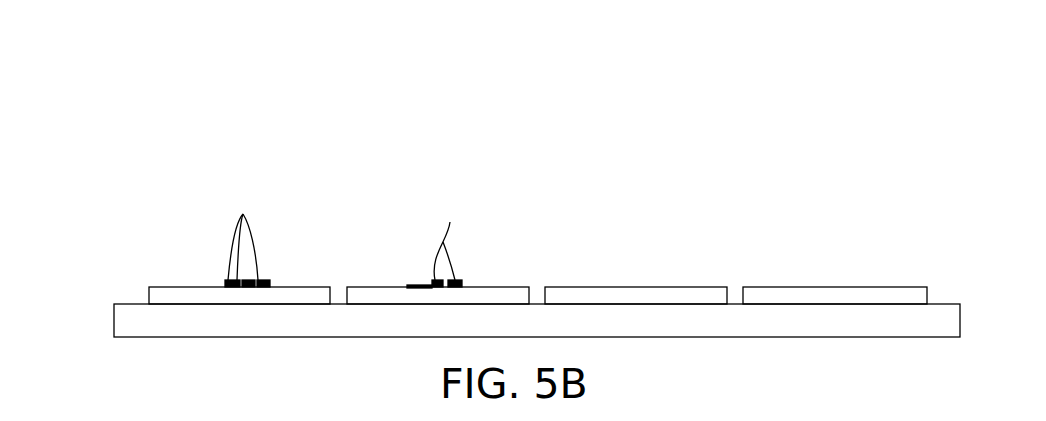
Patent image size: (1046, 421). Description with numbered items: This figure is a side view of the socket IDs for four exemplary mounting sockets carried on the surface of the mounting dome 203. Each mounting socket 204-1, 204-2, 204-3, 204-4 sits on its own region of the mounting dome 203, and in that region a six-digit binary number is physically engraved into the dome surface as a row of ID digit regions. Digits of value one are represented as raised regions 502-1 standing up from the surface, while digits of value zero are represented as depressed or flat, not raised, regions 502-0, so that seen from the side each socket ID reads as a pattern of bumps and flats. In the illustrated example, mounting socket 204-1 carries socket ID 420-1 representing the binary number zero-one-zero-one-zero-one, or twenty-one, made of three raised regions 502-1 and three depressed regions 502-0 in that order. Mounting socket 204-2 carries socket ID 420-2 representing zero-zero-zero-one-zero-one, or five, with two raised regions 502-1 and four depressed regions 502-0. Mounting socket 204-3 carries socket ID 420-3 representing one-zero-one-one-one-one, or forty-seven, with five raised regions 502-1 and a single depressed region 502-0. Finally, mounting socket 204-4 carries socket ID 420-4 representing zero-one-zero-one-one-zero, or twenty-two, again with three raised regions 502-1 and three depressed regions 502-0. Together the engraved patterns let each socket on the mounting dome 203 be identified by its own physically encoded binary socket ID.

The mounting dome 203 is at (114, 304).
The mounting socket 204-1 is at (195, 287).
The mounting socket 204-2 is at (363, 287).
The mounting socket 204-3 is at (583, 287).
The mounting socket 204-4 is at (788, 287).
The socket ID 420-1 is at (254, 178).
The socket ID 420-2 is at (451, 178).
The socket ID 420-3 is at (660, 251).
The socket ID 420-4 is at (851, 247).
The depressed region 502-0 is at (243, 214).
The raised region 502-1 is at (450, 222).